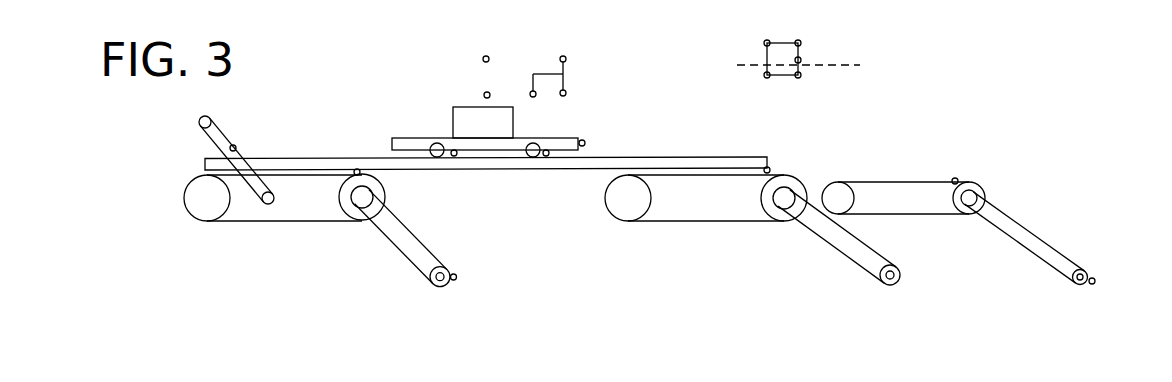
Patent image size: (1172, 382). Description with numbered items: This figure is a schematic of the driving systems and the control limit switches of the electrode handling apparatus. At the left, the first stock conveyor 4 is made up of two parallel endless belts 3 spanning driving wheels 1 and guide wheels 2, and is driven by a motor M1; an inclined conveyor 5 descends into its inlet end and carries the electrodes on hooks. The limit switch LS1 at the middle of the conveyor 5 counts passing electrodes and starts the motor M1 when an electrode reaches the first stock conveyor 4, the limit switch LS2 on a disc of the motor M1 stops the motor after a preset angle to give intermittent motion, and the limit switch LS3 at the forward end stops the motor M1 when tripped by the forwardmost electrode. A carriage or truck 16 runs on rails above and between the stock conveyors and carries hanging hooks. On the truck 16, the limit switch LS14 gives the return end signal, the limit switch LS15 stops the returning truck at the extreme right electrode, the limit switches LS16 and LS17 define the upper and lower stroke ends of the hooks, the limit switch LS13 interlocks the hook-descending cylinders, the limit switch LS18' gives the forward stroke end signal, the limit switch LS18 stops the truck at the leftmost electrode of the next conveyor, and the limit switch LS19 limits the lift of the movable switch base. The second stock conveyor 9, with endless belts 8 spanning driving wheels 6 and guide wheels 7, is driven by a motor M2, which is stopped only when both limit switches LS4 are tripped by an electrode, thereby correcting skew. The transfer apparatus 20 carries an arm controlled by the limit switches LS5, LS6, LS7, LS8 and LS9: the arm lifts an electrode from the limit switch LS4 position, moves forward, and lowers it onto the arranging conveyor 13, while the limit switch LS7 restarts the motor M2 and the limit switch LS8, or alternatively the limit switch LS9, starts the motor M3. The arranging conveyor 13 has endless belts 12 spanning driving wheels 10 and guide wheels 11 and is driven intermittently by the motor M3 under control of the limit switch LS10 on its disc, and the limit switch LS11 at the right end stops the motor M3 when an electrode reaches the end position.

The driving wheels 1 is at (350, 208).
The guide wheels 2 is at (197, 201).
The endless belts 3 is at (305, 222).
The first stock conveyor 4 is at (266, 221).
The conveyor 5 is at (217, 127).
The driving wheels 6 is at (773, 213).
The guide wheels 7 is at (618, 208).
The endless belts 8 is at (724, 223).
The second stock conveyor 9 is at (692, 225).
The driving wheels 10 is at (973, 182).
The guide wheels 11 is at (838, 192).
The endless belts 12 is at (907, 182).
The arranging conveyor 13 is at (909, 162).
The carriage or truck 16 is at (453, 122).
The transfer apparatus 20 is at (805, 57).
The limit switch LS1 is at (248, 140).
The limit switch LS2 is at (468, 266).
The limit switch LS3 is at (378, 182).
The limit switches LS4 is at (783, 162).
The limit switch LS5 is at (757, 86).
The limit switch LS6 is at (764, 34).
The limit switch LS7 is at (804, 34).
The limit switch LS8 is at (801, 86).
The limit switch LS9 is at (814, 57).
The limit switch LS10 is at (1110, 269).
The limit switch LS11 is at (947, 170).
The limit switch LS13 is at (547, 157).
The limit switch LS14 is at (455, 157).
The limit switch LS15 is at (513, 87).
The limit switch LS16 is at (492, 49).
The limit switch LS17 is at (466, 95).
The limit switch LS18 is at (561, 103).
The limit switch LS18' is at (606, 140).
The limit switch LS19 is at (566, 49).
The motor M1 is at (405, 249).
The motor M2 is at (840, 251).
The motor M3 is at (1026, 252).